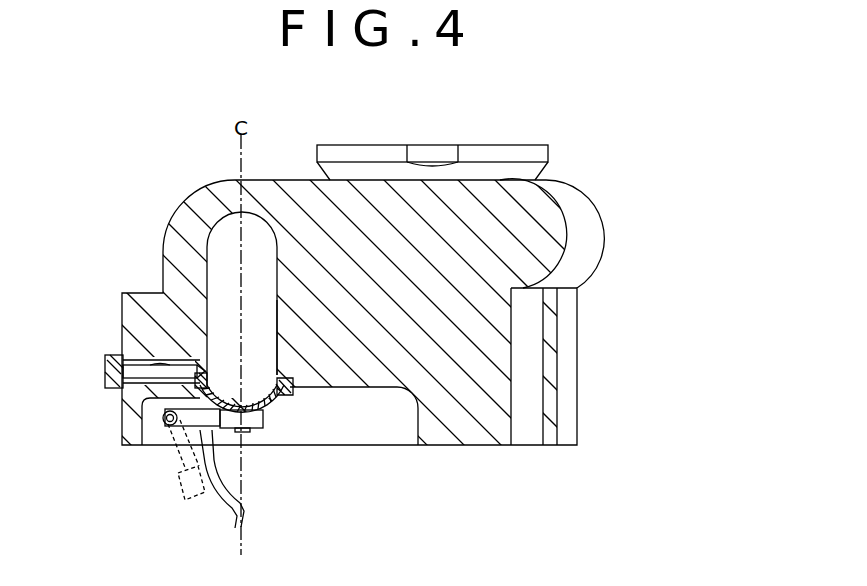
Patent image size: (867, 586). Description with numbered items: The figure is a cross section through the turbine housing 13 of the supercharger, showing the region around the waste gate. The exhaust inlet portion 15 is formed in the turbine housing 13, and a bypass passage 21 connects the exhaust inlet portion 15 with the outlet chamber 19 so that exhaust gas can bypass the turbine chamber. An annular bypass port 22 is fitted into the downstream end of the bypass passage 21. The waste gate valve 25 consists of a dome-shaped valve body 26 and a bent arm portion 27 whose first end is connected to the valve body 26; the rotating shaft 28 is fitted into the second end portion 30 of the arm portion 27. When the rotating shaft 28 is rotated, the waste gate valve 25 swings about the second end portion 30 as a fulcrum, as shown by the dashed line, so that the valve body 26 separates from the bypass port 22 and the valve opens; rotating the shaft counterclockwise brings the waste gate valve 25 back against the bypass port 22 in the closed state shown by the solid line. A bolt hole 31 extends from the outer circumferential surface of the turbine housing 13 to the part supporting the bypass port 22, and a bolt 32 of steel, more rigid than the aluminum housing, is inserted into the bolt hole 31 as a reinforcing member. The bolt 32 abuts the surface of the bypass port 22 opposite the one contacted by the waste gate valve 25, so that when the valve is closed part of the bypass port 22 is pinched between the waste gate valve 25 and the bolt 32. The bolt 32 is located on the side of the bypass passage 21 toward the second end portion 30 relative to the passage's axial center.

The turbine housing 13 is at (289, 184).
The exhaust inlet portion 15 is at (218, 226).
The outlet chamber 19 is at (403, 431).
The bypass passage 21 is at (277, 300).
The bypass port 22 is at (292, 386).
The waste gate valve 25 is at (265, 454).
The valve body 26 is at (268, 406).
The arm portion 27 is at (208, 396).
The rotating shaft 28 is at (172, 435).
The second end portion 30 is at (163, 417).
The bolt hole 31 is at (149, 363).
The bolt 32 is at (115, 352).